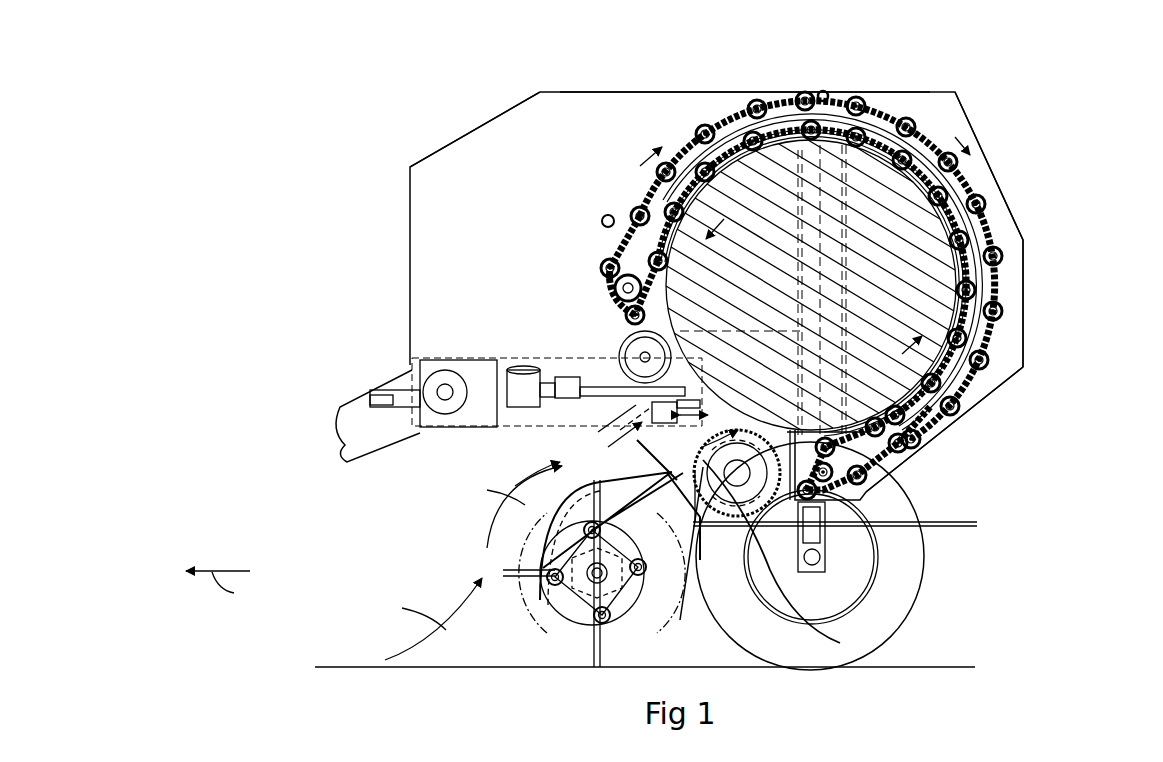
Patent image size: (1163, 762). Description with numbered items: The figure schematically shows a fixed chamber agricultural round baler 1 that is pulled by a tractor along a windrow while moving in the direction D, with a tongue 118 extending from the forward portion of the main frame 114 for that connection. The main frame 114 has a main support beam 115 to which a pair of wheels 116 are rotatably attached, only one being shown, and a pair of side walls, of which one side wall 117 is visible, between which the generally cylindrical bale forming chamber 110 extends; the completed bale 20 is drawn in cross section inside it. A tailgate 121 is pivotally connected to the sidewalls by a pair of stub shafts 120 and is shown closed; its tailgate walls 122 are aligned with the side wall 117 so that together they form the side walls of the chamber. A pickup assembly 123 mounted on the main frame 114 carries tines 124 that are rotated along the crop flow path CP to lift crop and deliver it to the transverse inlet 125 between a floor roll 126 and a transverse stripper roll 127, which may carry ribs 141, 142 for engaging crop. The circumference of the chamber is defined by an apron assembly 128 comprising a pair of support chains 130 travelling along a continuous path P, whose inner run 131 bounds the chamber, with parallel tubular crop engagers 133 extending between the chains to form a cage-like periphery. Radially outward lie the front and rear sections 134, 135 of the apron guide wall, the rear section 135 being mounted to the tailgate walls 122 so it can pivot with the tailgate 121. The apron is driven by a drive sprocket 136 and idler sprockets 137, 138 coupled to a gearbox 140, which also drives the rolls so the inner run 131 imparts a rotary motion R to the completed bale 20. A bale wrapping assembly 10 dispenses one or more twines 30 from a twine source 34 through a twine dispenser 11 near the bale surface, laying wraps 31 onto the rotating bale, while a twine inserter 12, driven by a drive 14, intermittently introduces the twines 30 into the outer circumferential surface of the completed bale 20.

The round baler 1 is at (1075, 81).
The bale wrapping assembly 10 is at (597, 396).
The twine dispenser 11 is at (594, 398).
The twine inserter 12 is at (680, 422).
The drive 14 is at (624, 429).
The completed bale 20 is at (997, 286).
The twine 30 is at (520, 385).
The wraps 31 is at (670, 541).
The twine source 34 is at (492, 378).
The bale forming chamber 110 is at (762, 100).
The main frame 114 is at (612, 92).
The main support beam 115 is at (872, 527).
The wheels 116 is at (924, 583).
The side wall 117 is at (492, 140).
The tongue 118 is at (362, 470).
The stub shafts 120 is at (846, 110).
The tailgate 121 is at (1024, 194).
The tailgate walls 122 is at (1010, 354).
The pickup assembly 123 is at (486, 559).
The tines 124 is at (566, 650).
The transverse inlet 125 is at (626, 458).
The floor roll 126 is at (723, 530).
The stripper roll 127 is at (547, 385).
The apron assembly 128 is at (985, 170).
The support chains 130 is at (1003, 232).
The inner run 131 is at (680, 140).
The tubular crop engagers 133 is at (755, 115).
The front section of apron guide wall 134 is at (779, 95).
The rear section of apron guide wall 135 is at (903, 122).
The drive sprocket 136 is at (616, 262).
The idler sprocket 137 is at (817, 92).
The idler sprocket 138 is at (880, 470).
The gearbox 140 is at (447, 414).
The ribs 141 is at (786, 555).
The ribs 142 is at (617, 356).